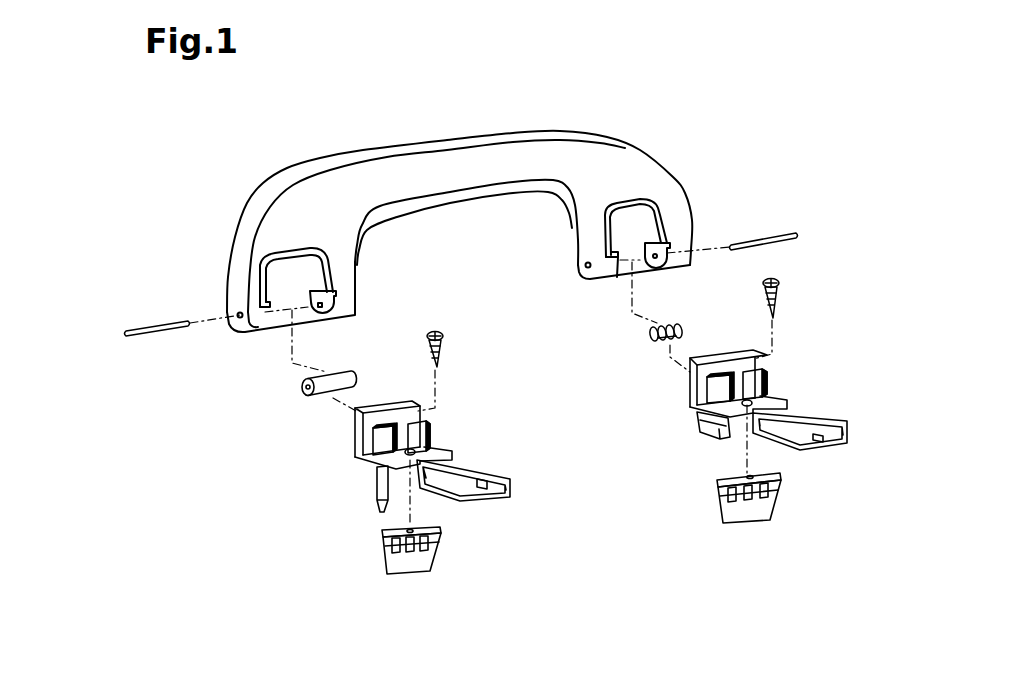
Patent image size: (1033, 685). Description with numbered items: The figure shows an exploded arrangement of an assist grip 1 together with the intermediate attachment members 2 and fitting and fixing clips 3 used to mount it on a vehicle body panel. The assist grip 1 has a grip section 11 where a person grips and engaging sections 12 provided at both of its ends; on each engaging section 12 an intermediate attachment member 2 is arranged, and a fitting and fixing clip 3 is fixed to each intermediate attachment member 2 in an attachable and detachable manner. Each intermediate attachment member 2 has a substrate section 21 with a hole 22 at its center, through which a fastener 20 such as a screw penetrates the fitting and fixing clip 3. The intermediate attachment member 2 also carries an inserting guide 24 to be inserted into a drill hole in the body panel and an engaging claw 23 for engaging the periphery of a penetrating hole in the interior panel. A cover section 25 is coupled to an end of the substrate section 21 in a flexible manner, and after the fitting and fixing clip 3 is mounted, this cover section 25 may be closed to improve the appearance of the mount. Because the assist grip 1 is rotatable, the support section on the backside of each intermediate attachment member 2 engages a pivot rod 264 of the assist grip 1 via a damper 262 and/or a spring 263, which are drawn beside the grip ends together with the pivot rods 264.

The assist grip 1 is at (555, 109).
The grip section 11 is at (400, 180).
The engaging section 12 is at (277, 310).
The intermediate attachment member 2 is at (310, 477).
The fitting and fixing clip 3 is at (411, 588).
The fastener 20 is at (440, 345).
The substrate section 21 is at (430, 452).
The hole 22 is at (410, 452).
The engaging claw 23 is at (710, 428).
The inserting guide 24 is at (377, 477).
The cover section 25 is at (483, 485).
The damper 262 is at (330, 390).
The spring 263 is at (720, 298).
The pivot rod 264 is at (755, 237).